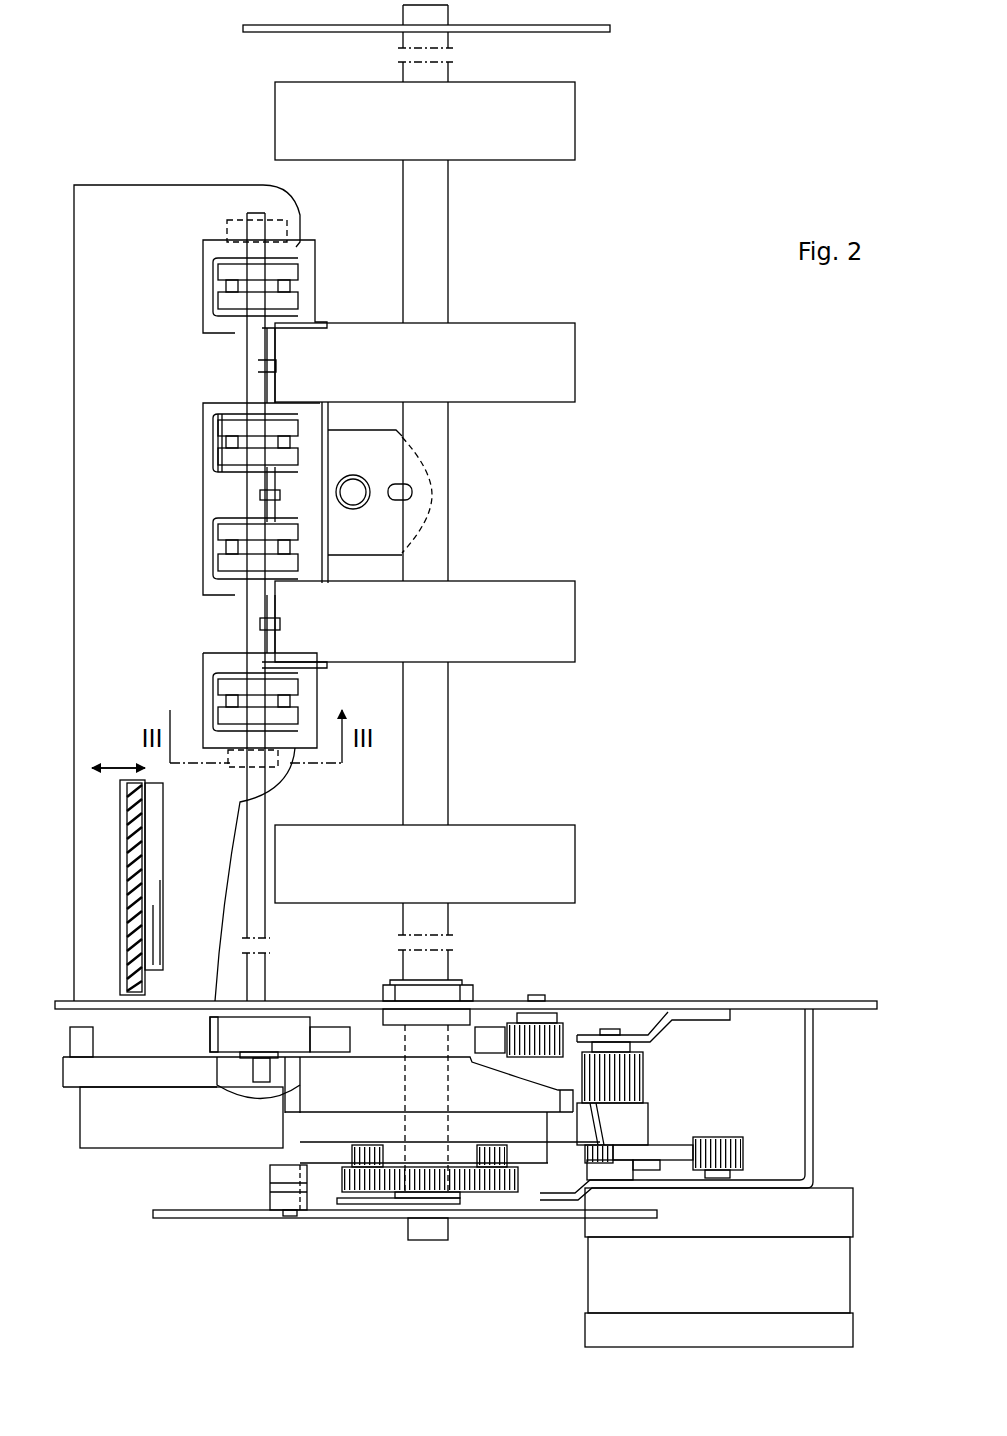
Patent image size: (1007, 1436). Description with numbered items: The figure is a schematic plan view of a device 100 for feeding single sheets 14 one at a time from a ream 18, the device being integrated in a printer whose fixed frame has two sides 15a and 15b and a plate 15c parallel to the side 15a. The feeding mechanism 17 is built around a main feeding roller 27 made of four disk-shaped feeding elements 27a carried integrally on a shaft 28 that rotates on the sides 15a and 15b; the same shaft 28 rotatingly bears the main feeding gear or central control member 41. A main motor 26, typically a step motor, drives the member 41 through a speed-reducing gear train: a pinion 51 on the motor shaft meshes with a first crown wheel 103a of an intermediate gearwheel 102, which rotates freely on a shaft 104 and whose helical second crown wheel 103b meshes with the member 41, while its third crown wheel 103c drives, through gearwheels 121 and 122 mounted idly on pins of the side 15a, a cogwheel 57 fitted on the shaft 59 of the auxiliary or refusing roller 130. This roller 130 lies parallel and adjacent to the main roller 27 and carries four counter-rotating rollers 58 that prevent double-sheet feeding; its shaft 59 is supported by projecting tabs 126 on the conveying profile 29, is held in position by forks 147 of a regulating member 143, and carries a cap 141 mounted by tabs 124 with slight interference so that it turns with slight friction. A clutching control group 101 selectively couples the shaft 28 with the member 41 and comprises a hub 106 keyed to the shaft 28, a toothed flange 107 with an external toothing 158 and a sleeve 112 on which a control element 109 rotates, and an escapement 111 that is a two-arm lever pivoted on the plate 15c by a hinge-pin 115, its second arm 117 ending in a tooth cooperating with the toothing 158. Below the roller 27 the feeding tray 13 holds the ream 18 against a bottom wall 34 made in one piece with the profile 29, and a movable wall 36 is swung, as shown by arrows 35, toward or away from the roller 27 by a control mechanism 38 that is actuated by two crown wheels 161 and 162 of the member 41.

The feeding tray 13 is at (107, 870).
The sheets 14 is at (160, 905).
The side 15a is at (672, 1003).
The side 15b is at (598, 33).
The plate 15c is at (172, 1218).
The feeding mechanism 17 is at (730, 888).
The ream 18 is at (160, 945).
The main motor 26 is at (597, 1288).
The main feeding roller 27 is at (627, 575).
The disk-shaped feeding elements 27a is at (555, 150).
The shaft 28 is at (448, 245).
The conveying profile 29 is at (121, 200).
The bottom wall 34 is at (74, 705).
The arrows 35 is at (120, 765).
The movable wall 36 is at (122, 812).
The control mechanism 38 is at (140, 1138).
The main feeding gear 41 is at (429, 1084).
The pinion 51 is at (745, 1152).
The cogwheel 57 is at (208, 1033).
The counter-rotating rollers 58 is at (300, 290).
The shaft 59 is at (250, 345).
The device 100 is at (755, 528).
The clutching control group 101 is at (325, 1228).
The intermediate gearwheel 102 is at (725, 1088).
The first crown wheel 103a is at (663, 1147).
The second helical crown wheel 103b is at (648, 1120).
The third crown wheel 103c is at (645, 1065).
The shaft 104 is at (612, 1033).
The hub 106 is at (362, 1150).
The toothed flange 107 is at (502, 1190).
The control element 109 is at (370, 1212).
The escapement 111 is at (247, 1184).
The sleeve 112 is at (425, 1205).
The hinge-pin 115 is at (258, 1207).
The second arm 117 is at (382, 1190).
The gearwheel 121 is at (565, 1025).
The gearwheel 122 is at (470, 1058).
The tabs 124 is at (260, 495).
The projecting tabs 126 is at (300, 228).
The auxiliary roller 130 is at (150, 517).
The cap 141 is at (220, 445).
The regulating member 143 is at (380, 432).
The forks 147 is at (240, 400).
The external toothing 158 is at (520, 1178).
The crown wheel 161 is at (310, 1095).
The crown wheel 162 is at (300, 1140).